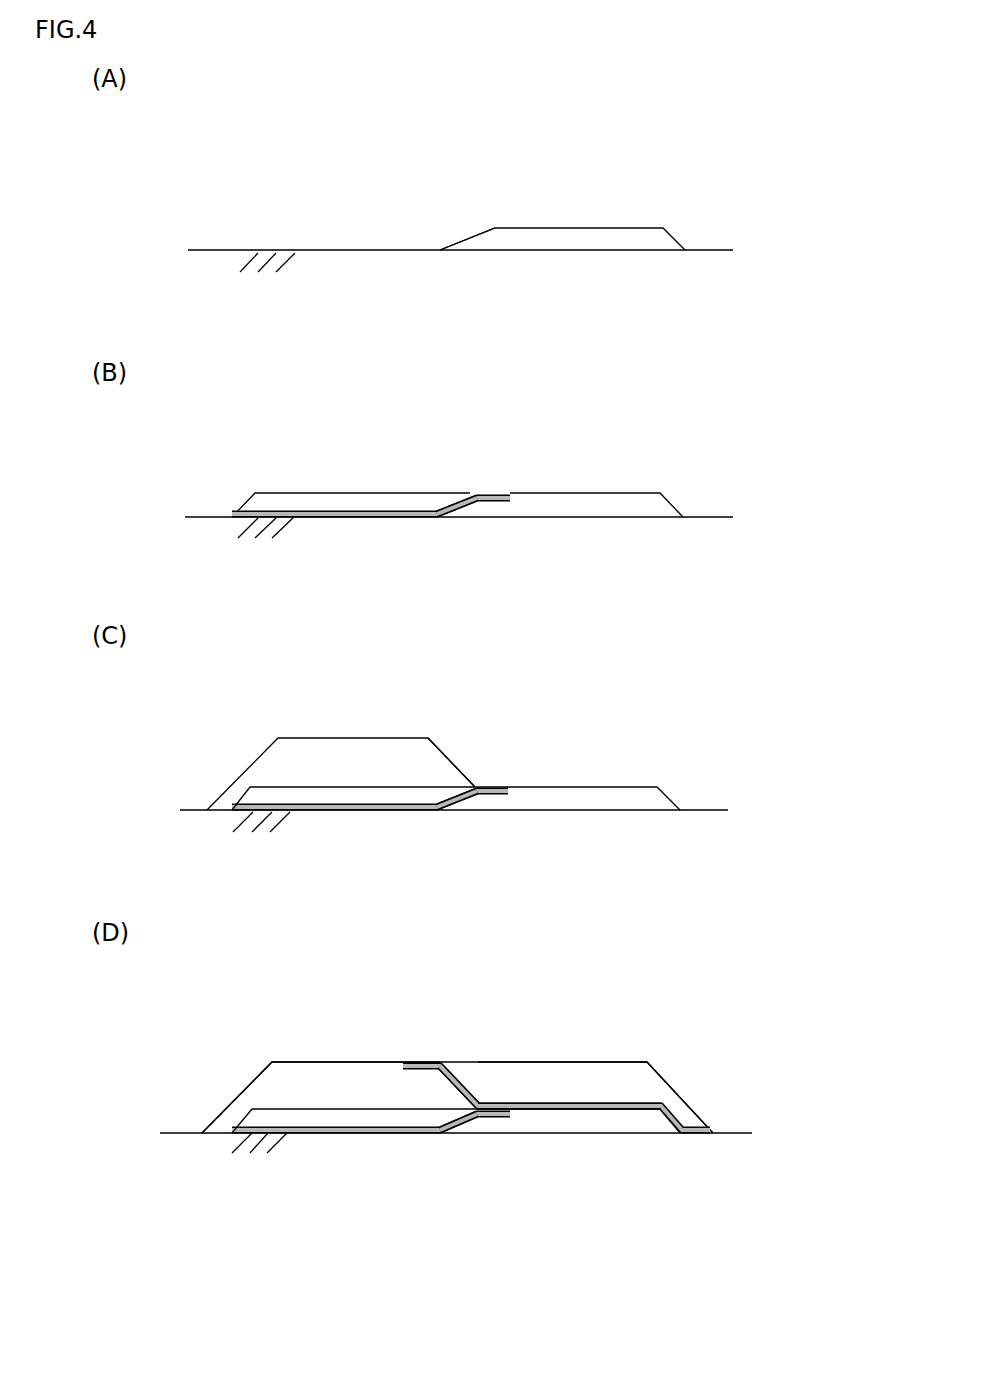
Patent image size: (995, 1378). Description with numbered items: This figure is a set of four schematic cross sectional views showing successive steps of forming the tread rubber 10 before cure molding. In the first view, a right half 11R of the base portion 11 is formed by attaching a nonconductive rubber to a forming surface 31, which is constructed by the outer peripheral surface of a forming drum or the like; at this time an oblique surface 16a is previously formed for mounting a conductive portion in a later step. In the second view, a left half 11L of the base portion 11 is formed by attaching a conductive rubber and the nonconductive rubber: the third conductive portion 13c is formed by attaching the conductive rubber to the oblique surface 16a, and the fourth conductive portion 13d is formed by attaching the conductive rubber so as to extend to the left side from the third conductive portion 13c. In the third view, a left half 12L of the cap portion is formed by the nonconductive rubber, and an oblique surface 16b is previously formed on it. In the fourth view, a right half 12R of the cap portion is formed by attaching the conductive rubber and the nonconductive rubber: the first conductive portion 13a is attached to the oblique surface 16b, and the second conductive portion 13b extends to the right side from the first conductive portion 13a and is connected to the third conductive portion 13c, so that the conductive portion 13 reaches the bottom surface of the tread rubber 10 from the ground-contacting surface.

The forming surface 31 is at (212, 257).
The oblique surface 16a is at (470, 233).
The right half of the base portion 11R is at (617, 230).
The left half of the base portion 11L is at (307, 493).
The base portion 11 is at (625, 788).
The fourth conductive portion 13d is at (347, 519).
The third conductive portion 13c is at (475, 511).
The left half of the cap portion 12L is at (314, 745).
The oblique surface 16b is at (452, 761).
The tread rubber 10 is at (243, 1078).
The right half of the cap portion 12R is at (622, 1068).
The conductive portion 13 is at (653, 1100).
The first conductive portion 13a is at (466, 1088).
The second conductive portion 13b is at (565, 1102).